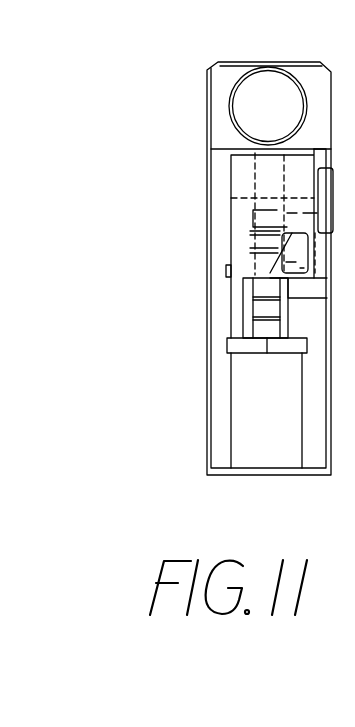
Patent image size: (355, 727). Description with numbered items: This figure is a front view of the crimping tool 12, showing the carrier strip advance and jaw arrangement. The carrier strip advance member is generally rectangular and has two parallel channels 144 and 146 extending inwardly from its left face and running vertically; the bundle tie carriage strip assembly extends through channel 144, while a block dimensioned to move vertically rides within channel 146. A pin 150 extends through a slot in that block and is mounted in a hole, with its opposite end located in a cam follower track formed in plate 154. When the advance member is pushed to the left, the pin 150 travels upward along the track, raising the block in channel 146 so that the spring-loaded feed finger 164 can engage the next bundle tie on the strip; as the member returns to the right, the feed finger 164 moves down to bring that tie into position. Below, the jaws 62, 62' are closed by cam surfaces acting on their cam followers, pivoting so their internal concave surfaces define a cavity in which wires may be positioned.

The cassette housing 12 is at (273, 38).
The channel 144 is at (263, 183).
The channel 146 is at (293, 173).
The plate 154 is at (267, 203).
The pin 150 is at (290, 227).
The feed finger 164 is at (275, 250).
The jaw 62 is at (224, 308).
The jaw 62' is at (229, 340).